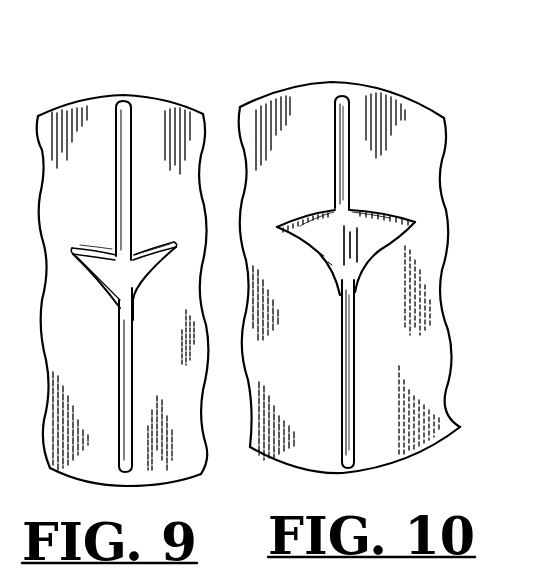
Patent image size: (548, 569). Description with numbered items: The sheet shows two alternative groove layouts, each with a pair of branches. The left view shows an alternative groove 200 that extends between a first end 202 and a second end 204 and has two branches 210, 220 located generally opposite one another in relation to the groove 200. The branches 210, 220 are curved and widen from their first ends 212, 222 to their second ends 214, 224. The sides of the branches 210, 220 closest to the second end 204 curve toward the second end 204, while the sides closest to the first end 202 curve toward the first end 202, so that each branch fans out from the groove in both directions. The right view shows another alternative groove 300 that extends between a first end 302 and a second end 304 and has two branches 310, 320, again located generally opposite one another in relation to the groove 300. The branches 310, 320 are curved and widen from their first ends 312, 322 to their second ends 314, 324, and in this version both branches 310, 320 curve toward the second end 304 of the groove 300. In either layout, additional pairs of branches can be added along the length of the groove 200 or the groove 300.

In FIG. 9, the groove 200 is at (178, 58).
In FIG. 9, the first end 202 is at (123, 97).
In FIG. 9, the second end 204 is at (117, 460).
In FIG. 9, the branch 210 is at (100, 281).
In FIG. 9, the first end 212 is at (72, 248).
In FIG. 9, the second end 214 is at (112, 249).
In FIG. 9, the branch 220 is at (157, 277).
In FIG. 9, the first end 222 is at (176, 244).
In FIG. 9, the second end 224 is at (134, 254).
In FIG. 10, the groove 300 is at (449, 47).
In FIG. 10, the first end 302 is at (346, 97).
In FIG. 10, the second end 304 is at (340, 455).
In FIG. 10, the branch 310 is at (330, 250).
In FIG. 10, the first end 312 is at (277, 226).
In FIG. 10, the second end 314 is at (334, 209).
In FIG. 10, the branch 320 is at (390, 243).
In FIG. 10, the first end 322 is at (415, 222).
In FIG. 10, the second end 324 is at (354, 209).